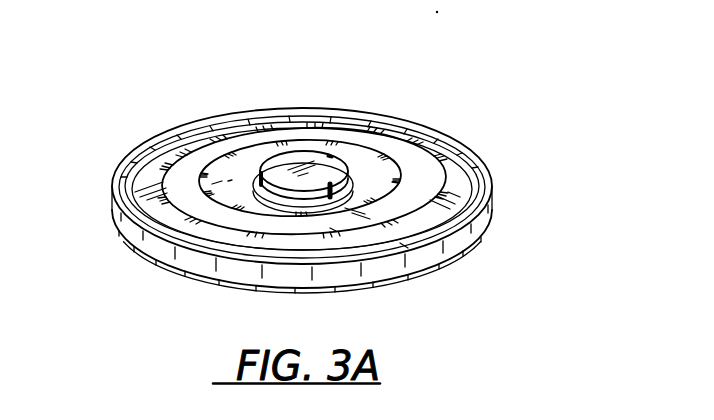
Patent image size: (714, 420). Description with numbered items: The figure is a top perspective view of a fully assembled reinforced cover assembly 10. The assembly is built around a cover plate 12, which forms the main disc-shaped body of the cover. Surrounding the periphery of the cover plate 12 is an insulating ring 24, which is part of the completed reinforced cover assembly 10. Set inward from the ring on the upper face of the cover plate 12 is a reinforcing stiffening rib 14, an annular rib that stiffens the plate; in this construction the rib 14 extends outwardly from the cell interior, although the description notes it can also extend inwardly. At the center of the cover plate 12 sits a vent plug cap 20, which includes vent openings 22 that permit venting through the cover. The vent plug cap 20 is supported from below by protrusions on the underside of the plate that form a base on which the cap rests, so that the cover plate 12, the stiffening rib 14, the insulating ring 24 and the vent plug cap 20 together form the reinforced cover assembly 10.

The reinforced cover assembly 10 is at (328, 172).
The cover plate 12 is at (150, 168).
The reinforcing stiffening rib 14 is at (395, 157).
The vent plug cap 20 is at (325, 178).
The vent openings 22 is at (334, 186).
The insulating ring 24 is at (300, 108).